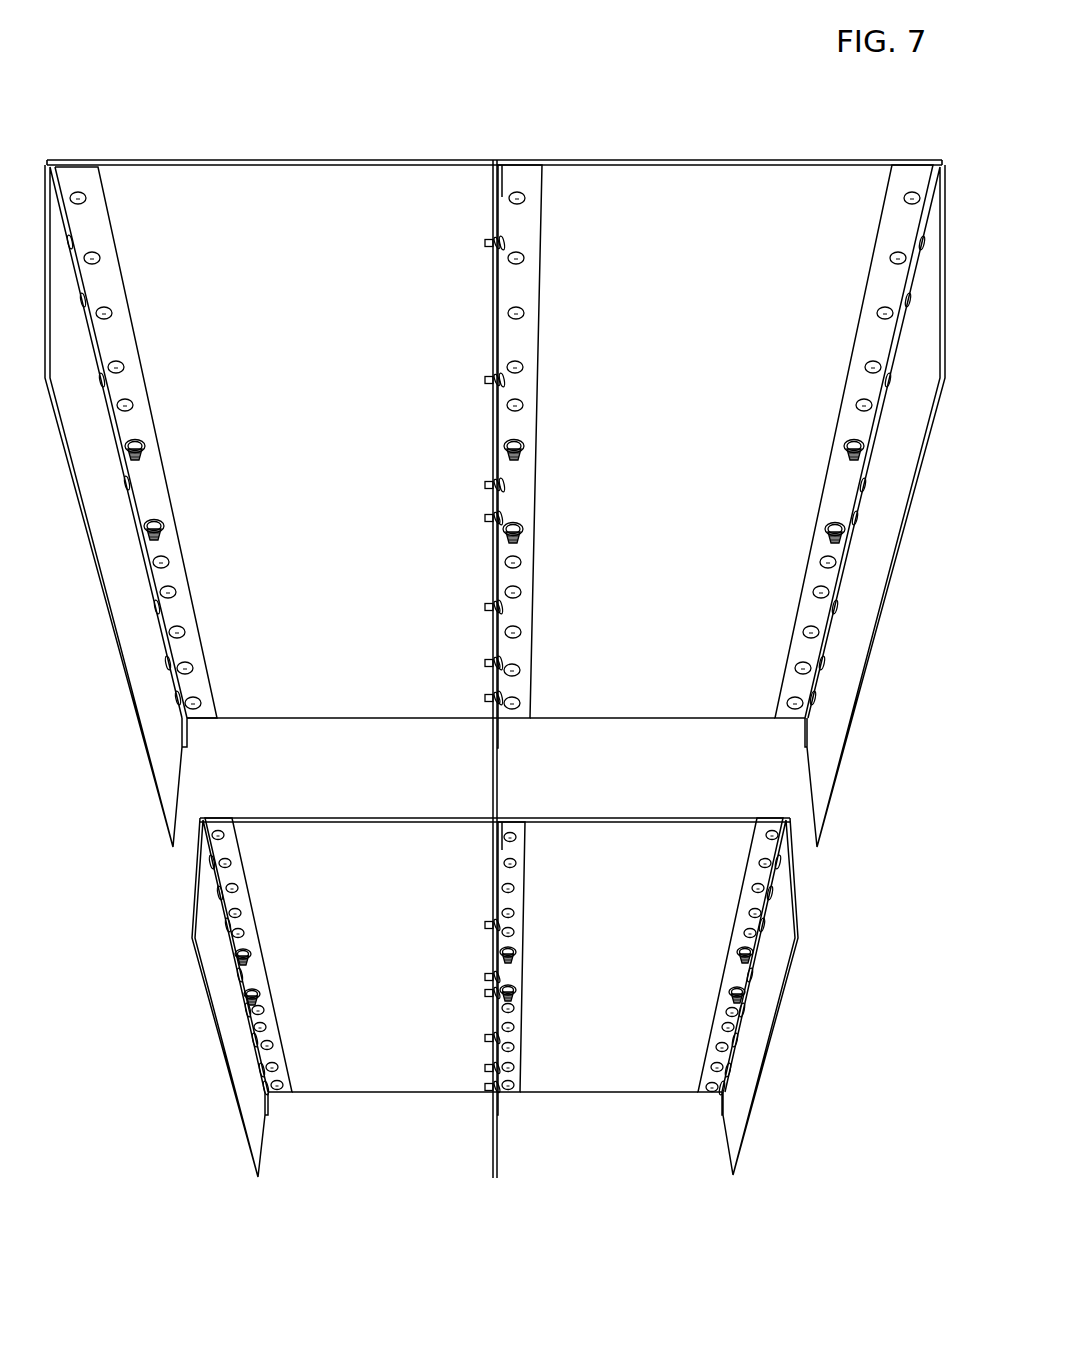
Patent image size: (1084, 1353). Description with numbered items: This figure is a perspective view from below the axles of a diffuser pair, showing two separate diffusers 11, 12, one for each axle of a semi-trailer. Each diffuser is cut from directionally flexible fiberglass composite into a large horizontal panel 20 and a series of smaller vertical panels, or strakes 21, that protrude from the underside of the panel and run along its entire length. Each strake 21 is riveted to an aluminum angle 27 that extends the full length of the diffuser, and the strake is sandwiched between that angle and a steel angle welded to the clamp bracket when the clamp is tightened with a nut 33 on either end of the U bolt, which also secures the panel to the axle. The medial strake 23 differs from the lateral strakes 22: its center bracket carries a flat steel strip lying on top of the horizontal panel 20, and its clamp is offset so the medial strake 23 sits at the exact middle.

The diffuser 11 is at (494, 439).
The diffuser 12 is at (499, 996).
The horizontal panel 20 is at (193, 506).
The strake 21 is at (898, 578).
The lateral strake 22 is at (854, 441).
The medial strake 23 is at (531, 669).
The aluminum angle 27 is at (222, 830).
The nut 33 is at (845, 452).